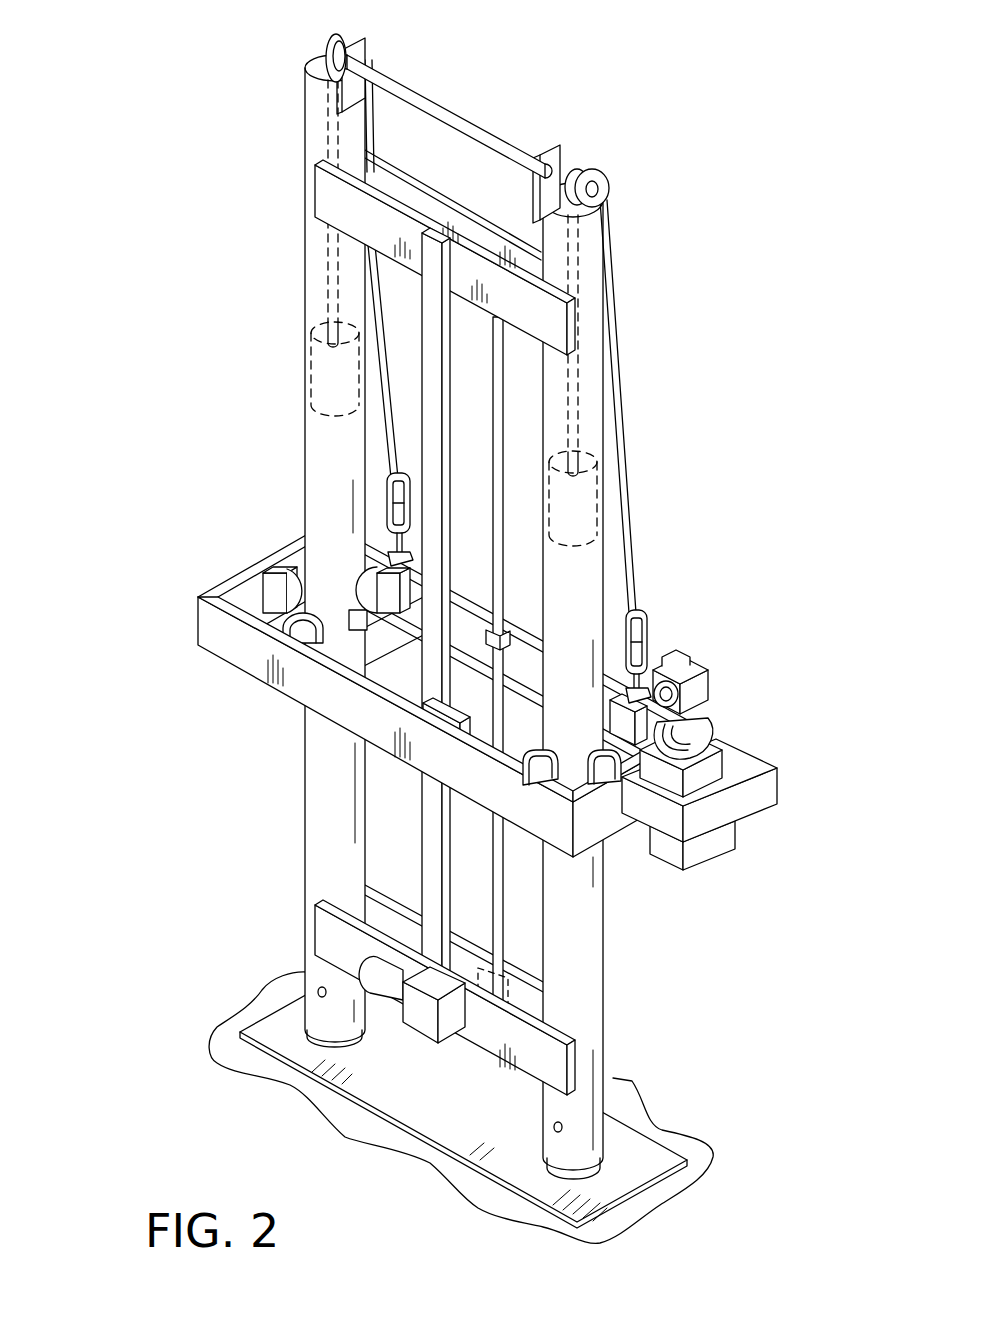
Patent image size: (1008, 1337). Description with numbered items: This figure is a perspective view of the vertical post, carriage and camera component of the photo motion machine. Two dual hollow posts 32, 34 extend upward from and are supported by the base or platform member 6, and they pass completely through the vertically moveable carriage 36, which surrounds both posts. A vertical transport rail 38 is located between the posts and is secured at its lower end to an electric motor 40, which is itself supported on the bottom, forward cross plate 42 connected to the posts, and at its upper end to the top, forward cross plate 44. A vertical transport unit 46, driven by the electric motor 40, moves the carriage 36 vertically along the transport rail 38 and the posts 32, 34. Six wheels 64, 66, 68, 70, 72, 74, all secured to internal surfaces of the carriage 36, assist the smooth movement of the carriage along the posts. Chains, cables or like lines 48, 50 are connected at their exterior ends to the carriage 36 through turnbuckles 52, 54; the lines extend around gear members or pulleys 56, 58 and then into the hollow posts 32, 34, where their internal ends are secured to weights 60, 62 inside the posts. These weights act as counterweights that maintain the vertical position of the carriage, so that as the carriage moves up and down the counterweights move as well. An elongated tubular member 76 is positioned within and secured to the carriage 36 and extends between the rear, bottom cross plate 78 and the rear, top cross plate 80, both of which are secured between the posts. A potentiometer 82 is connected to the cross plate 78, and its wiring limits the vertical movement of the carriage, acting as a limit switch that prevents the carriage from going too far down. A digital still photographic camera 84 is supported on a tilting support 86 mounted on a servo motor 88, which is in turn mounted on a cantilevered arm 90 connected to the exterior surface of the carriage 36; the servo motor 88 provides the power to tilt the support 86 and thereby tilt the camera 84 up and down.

The base member 6 is at (640, 1160).
The hollow post 32 is at (323, 827).
The hollow post 34 is at (580, 957).
The carriage 36 is at (228, 645).
The vertical transport rail 38 is at (435, 885).
The electric motor 40 is at (420, 1022).
The bottom, forward cross plate 42 is at (333, 938).
The top, forward cross plate 44 is at (517, 297).
The vertical transport unit 46 is at (412, 697).
The line 48 is at (387, 117).
The line 50 is at (620, 347).
The turnbuckle 52 is at (388, 480).
The turnbuckle 54 is at (640, 610).
The pulley 56 is at (332, 32).
The pulley 58 is at (600, 183).
The weight 60 is at (327, 380).
The weight 62 is at (577, 512).
The wheel 64 is at (295, 620).
The wheel 66 is at (298, 568).
The wheel 68 is at (378, 570).
The wheel 70 is at (555, 767).
The wheel 72 is at (630, 762).
The wheel 74 is at (613, 710).
The elongated tubular member 76 is at (498, 387).
The rear, bottom cross plate 78 is at (530, 1017).
The rear, top cross plate 80 is at (397, 193).
The potentiometer 82 is at (512, 1000).
The digital still photographic camera 84 is at (710, 677).
The tilting support 86 is at (700, 730).
The servo motor 88 is at (707, 770).
The cantilevered arm 90 is at (710, 838).